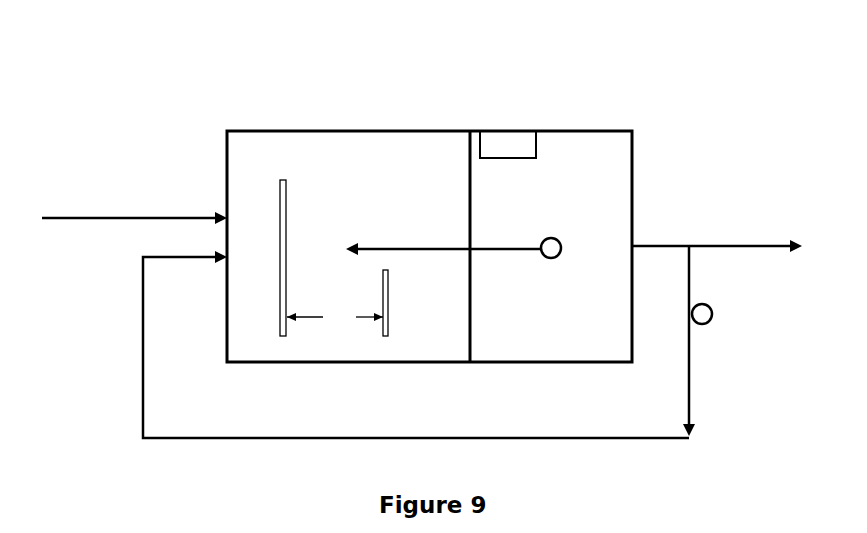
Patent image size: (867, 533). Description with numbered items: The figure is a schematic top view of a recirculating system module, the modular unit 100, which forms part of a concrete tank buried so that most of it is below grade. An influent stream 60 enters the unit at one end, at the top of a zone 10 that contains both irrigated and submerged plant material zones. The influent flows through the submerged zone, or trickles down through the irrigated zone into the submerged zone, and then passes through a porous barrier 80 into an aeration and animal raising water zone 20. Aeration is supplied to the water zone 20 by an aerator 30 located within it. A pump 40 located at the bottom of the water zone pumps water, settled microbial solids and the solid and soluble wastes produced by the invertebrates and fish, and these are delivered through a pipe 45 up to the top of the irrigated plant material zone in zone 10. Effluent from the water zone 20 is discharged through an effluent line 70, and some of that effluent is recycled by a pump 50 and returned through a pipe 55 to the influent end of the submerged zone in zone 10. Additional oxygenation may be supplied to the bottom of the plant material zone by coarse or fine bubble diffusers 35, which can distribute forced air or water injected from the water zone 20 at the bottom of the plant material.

The modular unit 100 is at (222, 124).
The zone containing irrigated and submerged plant material zones 10 is at (334, 248).
The aeration and animal raising water zone 20 is at (534, 246).
The aerator 30 is at (508, 144).
The coarse or fine bubble diffusers 35 is at (335, 318).
The pump 40 is at (565, 248).
The pipe 45 is at (443, 259).
The pump 50 is at (716, 315).
The pipe 55 is at (431, 342).
The influent stream 60 is at (134, 230).
The effluent line 70 is at (717, 259).
The porous barrier 80 is at (483, 246).